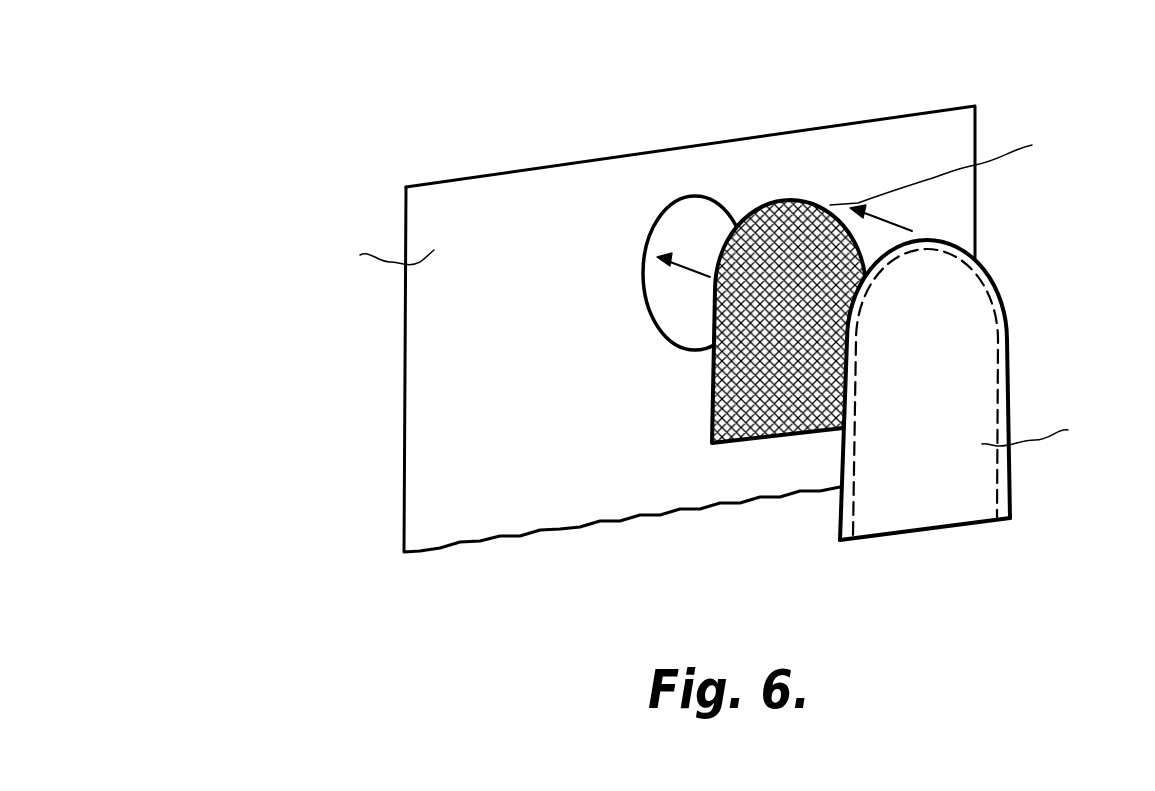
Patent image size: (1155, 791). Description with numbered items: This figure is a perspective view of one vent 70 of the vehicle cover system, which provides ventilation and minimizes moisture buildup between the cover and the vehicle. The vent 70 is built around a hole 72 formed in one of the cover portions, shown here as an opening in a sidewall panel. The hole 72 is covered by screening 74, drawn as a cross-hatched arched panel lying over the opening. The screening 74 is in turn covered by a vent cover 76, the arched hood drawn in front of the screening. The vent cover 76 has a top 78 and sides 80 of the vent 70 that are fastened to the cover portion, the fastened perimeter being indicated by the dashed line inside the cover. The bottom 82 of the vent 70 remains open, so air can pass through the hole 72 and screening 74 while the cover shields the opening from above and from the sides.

The vent 70 is at (699, 108).
The hole 72 is at (667, 222).
The screening 74 is at (800, 198).
The vent cover 76 is at (978, 326).
The top 78 is at (947, 260).
The sides 80 is at (1012, 383).
The bottom 82 is at (927, 533).